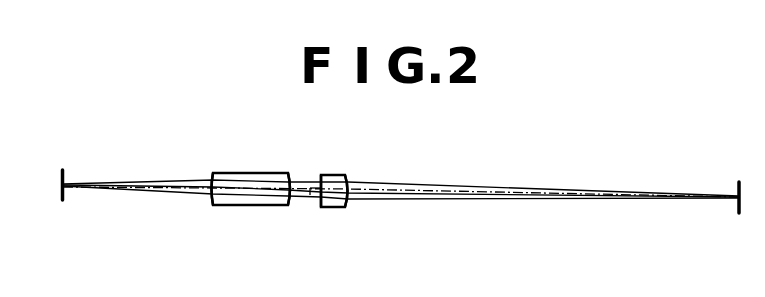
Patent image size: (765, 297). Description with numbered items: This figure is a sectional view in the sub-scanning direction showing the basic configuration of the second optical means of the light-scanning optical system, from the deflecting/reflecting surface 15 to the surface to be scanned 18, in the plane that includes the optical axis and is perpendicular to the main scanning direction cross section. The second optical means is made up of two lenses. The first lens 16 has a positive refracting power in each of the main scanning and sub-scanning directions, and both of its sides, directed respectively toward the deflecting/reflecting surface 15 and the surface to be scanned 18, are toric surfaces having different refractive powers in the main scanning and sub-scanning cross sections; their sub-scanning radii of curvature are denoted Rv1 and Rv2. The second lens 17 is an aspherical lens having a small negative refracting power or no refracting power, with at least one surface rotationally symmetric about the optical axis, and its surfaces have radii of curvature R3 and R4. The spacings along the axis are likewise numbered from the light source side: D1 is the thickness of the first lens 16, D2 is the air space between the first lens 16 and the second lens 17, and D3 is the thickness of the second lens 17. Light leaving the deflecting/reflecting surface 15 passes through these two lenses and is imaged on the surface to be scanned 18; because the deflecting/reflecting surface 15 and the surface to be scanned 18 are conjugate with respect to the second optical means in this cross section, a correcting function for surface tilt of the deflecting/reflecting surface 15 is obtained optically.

The deflecting/reflecting surface 15 is at (64, 201).
The first lens 16 is at (212, 207).
The second lens 17 is at (337, 208).
The surface to be scanned 18 is at (738, 206).
The radius of curvature of first lens surface in sub-scanning direction Rv1 is at (213, 175).
The radius of curvature of second lens surface in sub-scanning direction Rv2 is at (289, 174).
The radius of curvature of third lens surface R3 is at (319, 175).
The radius of curvature of fourth lens surface R4 is at (350, 176).
The air space D1 is at (262, 186).
The air space D2 is at (310, 193).
The air space D3 is at (355, 200).